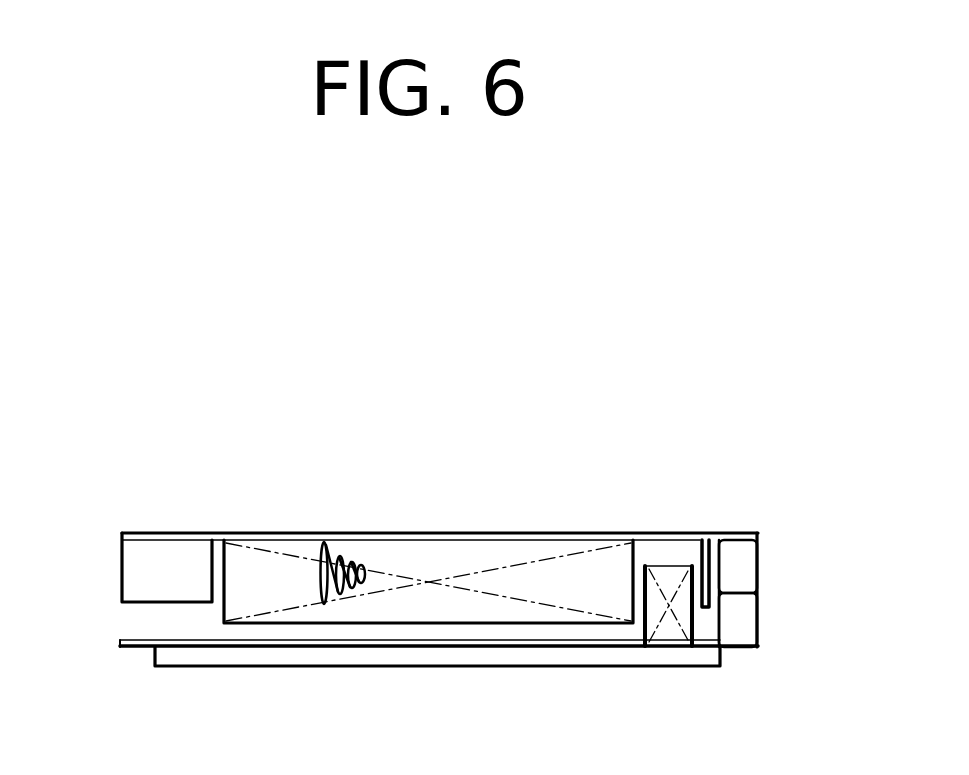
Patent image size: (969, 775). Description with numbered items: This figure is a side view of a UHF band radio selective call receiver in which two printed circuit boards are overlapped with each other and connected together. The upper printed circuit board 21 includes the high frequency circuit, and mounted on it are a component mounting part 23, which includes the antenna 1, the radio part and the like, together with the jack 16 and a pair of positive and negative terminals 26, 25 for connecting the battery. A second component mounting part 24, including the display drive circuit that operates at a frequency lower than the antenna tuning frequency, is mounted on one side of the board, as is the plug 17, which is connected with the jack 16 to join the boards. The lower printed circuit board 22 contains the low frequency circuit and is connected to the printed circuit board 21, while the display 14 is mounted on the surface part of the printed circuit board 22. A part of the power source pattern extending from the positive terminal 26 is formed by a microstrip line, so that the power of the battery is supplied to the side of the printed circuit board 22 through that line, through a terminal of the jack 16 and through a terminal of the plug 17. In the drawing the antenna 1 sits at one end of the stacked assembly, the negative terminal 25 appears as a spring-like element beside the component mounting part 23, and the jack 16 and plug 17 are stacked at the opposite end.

The antenna 1 is at (137, 578).
The display 14 is at (600, 670).
The jack 16 is at (760, 560).
The plug 17 is at (760, 623).
The printed circuit board 21 is at (499, 533).
The printed circuit board 22 is at (133, 650).
The component mounting part 23 is at (433, 607).
The component mounting part 24 is at (668, 633).
The negative terminal 25 is at (361, 557).
The positive terminal 26 is at (697, 558).